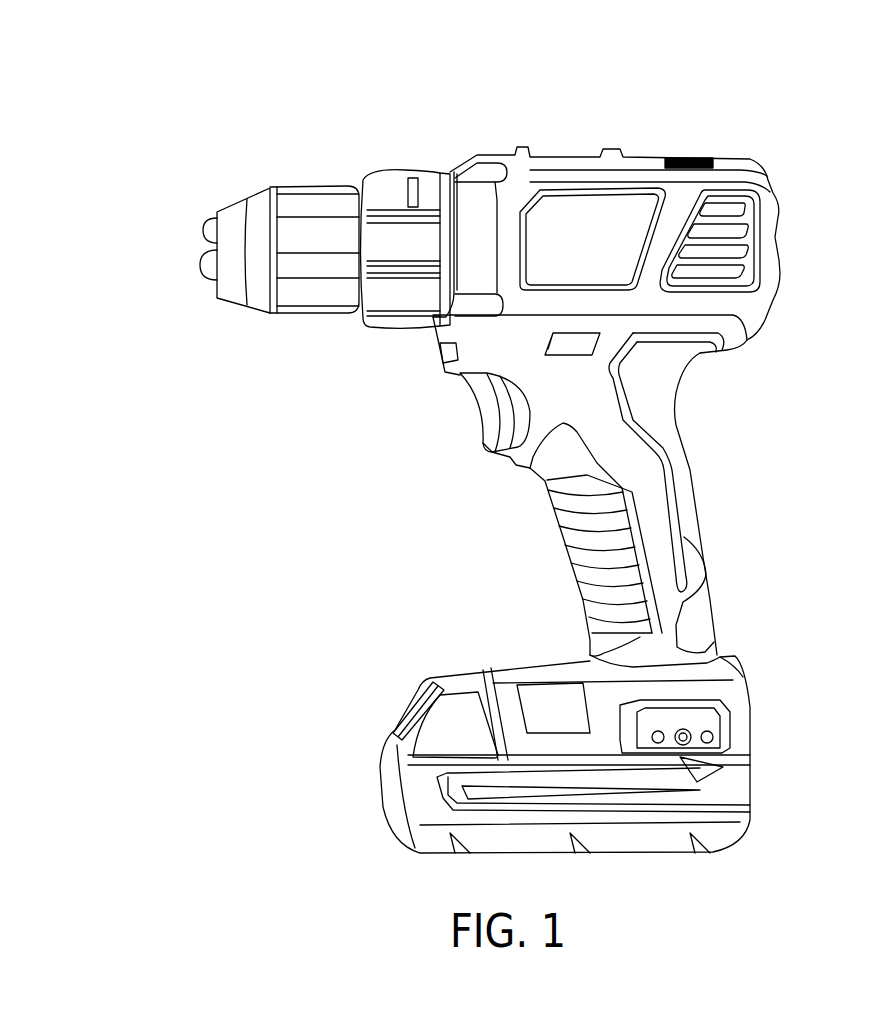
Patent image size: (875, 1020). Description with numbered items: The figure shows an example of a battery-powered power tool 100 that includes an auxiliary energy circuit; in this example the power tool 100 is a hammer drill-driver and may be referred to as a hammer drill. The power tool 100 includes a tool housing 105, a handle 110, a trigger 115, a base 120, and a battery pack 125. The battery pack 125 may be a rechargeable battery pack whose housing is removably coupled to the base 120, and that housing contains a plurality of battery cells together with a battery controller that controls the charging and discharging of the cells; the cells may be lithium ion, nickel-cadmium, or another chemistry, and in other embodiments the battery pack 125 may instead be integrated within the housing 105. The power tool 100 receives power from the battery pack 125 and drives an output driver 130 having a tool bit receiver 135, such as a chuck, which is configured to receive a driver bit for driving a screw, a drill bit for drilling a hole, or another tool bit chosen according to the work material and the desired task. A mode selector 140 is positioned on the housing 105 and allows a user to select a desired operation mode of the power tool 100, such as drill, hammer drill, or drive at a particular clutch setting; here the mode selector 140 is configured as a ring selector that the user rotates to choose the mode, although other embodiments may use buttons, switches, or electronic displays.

The power tool 100 is at (130, 131).
The tool housing 105 is at (767, 178).
The handle 110 is at (697, 512).
The trigger 115 is at (483, 412).
The base 120 is at (550, 672).
The battery pack 125 is at (400, 790).
The output driver 130 is at (297, 197).
The tool bit receiver 135 is at (205, 240).
The mode selector 140 is at (413, 170).